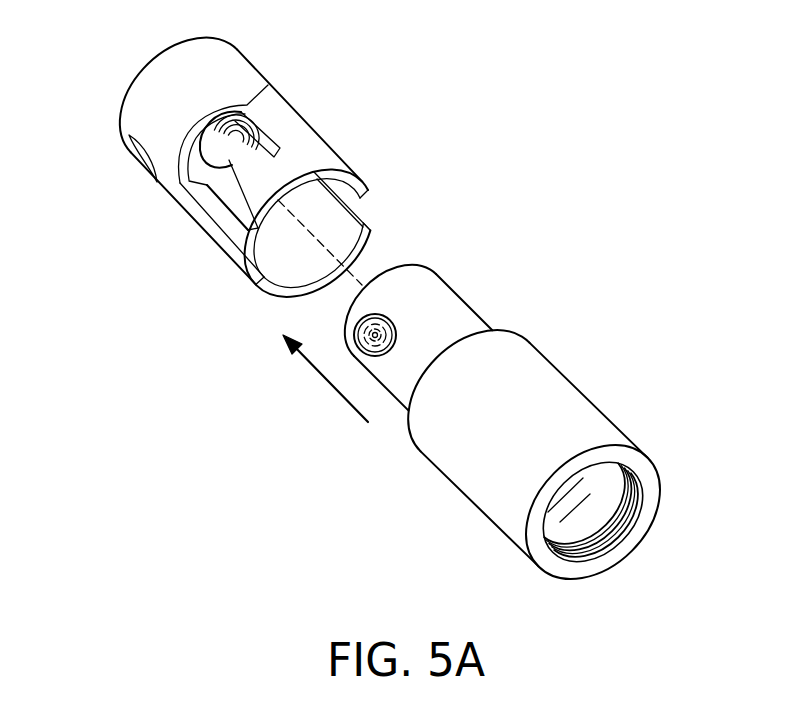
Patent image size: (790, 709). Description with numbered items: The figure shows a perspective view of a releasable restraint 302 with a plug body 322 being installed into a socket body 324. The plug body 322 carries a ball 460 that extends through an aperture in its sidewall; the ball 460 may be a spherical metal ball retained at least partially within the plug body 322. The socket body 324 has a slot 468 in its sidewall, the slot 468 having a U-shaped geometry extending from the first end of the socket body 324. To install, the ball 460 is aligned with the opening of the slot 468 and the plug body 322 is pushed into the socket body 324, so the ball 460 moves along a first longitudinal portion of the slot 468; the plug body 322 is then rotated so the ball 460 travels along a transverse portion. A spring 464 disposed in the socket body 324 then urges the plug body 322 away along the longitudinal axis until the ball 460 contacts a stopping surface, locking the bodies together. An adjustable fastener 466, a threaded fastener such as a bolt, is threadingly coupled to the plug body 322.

The releasable restraint 302 is at (588, 206).
The plug body 322 is at (560, 388).
The socket body 324 is at (132, 98).
The ball 460 is at (390, 330).
The spring 464 is at (192, 182).
The adjustable fastener 466 is at (583, 482).
The slot 468 is at (245, 110).